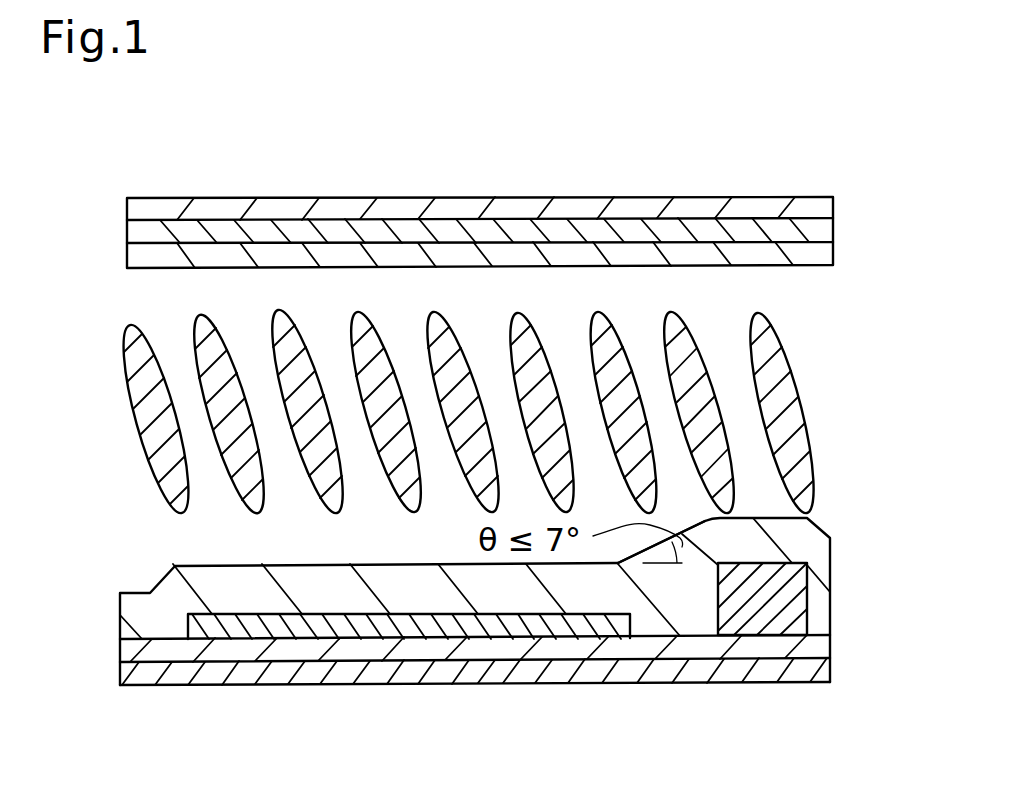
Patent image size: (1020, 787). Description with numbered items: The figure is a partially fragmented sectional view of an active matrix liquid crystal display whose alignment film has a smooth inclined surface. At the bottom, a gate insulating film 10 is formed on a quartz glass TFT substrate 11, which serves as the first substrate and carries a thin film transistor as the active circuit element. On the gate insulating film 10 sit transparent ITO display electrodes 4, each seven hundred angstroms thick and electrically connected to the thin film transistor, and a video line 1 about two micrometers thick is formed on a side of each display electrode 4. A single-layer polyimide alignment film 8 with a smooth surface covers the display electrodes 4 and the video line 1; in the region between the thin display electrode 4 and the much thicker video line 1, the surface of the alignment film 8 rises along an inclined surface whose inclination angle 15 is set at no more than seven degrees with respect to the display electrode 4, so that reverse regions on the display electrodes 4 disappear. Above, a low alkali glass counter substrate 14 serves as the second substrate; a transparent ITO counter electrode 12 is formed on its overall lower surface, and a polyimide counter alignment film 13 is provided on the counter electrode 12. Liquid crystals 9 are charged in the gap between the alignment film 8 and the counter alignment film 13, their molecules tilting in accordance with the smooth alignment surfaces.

The video line 1 is at (797, 587).
The display electrode 4 is at (250, 630).
The alignment film 8 is at (817, 535).
The liquid crystals 9 is at (777, 350).
The gate insulating film 10 is at (437, 650).
The TFT substrate 11 is at (560, 672).
The counter electrode 12 is at (470, 223).
The counter alignment film 13 is at (835, 250).
The counter substrate 14 is at (148, 208).
The inclination angle 15 is at (683, 555).